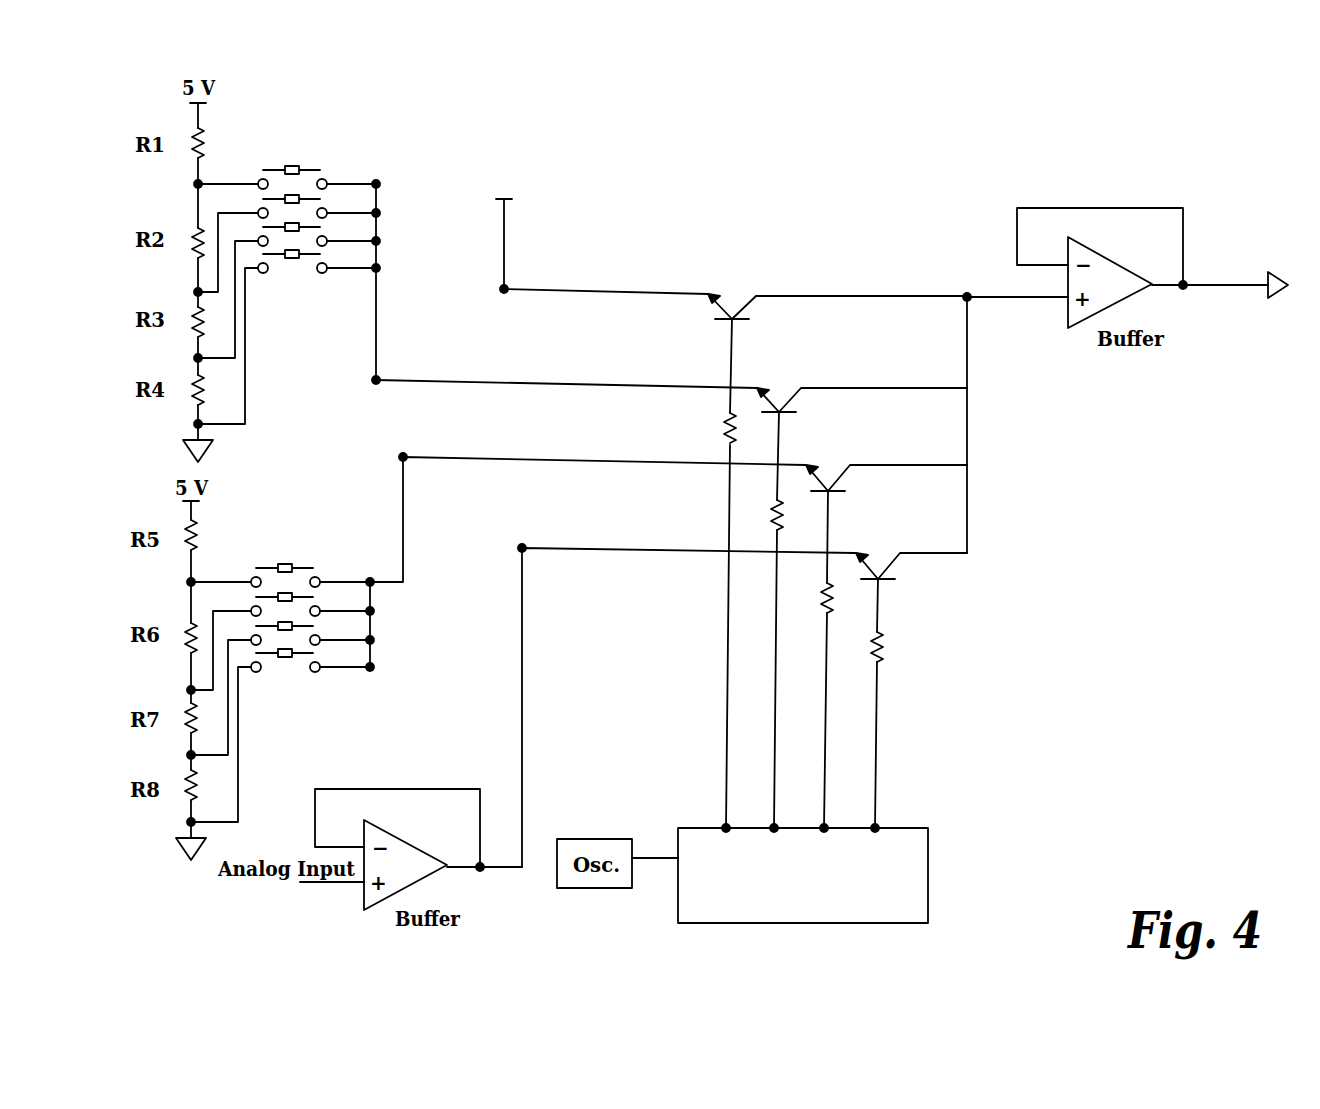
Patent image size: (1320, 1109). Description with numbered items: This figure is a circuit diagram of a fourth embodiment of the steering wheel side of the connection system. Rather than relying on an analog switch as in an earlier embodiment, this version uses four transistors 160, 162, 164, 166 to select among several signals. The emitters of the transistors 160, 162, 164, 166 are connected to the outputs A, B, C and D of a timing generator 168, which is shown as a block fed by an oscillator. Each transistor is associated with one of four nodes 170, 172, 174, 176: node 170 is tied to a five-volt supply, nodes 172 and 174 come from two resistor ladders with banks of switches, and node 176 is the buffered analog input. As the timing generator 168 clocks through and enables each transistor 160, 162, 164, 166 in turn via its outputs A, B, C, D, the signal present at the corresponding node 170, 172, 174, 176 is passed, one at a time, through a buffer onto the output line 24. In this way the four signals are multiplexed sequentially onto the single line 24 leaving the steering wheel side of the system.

The transistor 160 is at (837, 546).
The transistor 162 is at (862, 592).
The transistor 164 is at (886, 631).
The transistor 166 is at (911, 675).
The timing generator 168 is at (908, 918).
The node 170 is at (600, 235).
The node 172 is at (564, 368).
The node 174 is at (587, 504).
The node 176 is at (683, 692).
The line 24 is at (1212, 287).